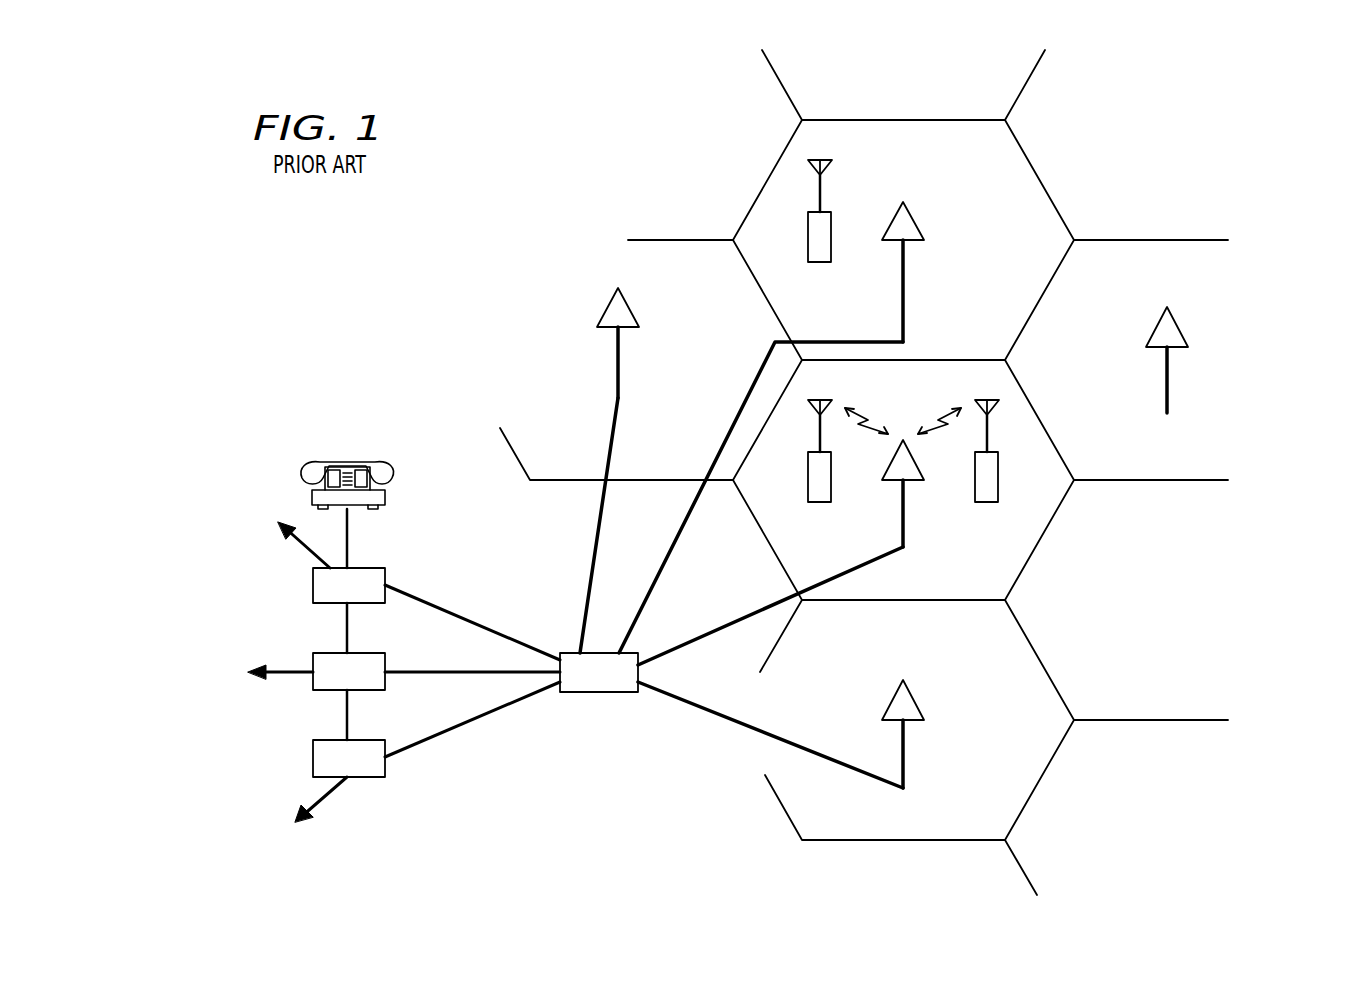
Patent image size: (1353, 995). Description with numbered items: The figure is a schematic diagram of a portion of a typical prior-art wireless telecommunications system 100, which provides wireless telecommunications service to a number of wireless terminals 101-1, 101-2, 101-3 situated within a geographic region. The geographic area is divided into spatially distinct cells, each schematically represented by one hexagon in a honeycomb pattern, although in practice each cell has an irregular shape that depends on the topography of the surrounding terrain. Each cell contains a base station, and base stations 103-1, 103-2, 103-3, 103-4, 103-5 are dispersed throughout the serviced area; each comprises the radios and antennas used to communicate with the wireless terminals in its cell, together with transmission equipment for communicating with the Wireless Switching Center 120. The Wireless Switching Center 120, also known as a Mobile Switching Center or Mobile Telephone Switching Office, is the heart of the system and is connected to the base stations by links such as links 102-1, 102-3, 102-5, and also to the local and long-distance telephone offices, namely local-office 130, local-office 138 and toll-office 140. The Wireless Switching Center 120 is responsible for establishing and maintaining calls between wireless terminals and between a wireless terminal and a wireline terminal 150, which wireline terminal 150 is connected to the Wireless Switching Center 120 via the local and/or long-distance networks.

The wireless telecommunications system 100 is at (338, 231).
The wireless terminal 101-1 is at (820, 502).
The wireless terminal 101-2 is at (987, 502).
The wireless terminal 101-3 is at (820, 262).
The wireline link 102-1 is at (720, 627).
The wireline link 102-3 is at (589, 596).
The wireline link 102-5 is at (703, 707).
The base station 103-1 is at (903, 525).
The base station 103-2 is at (903, 278).
The base station 103-3 is at (618, 365).
The base station 103-4 is at (1167, 397).
The base station 103-5 is at (903, 765).
The Wireless Switching Center 120 is at (600, 692).
The local-office 130 is at (313, 582).
The local-office 138 is at (313, 758).
The toll-office 140 is at (313, 656).
The wireline terminal 150 is at (348, 456).